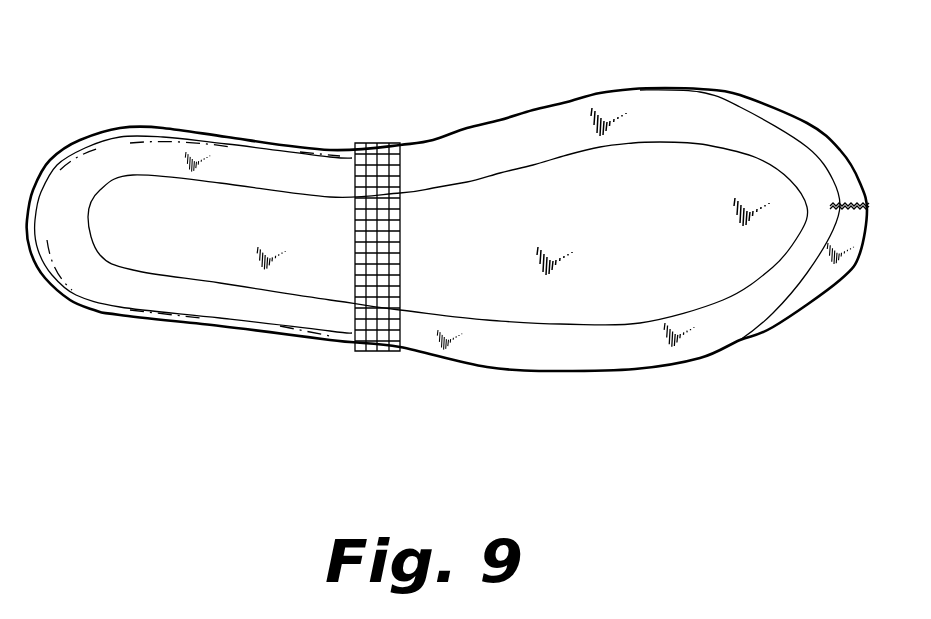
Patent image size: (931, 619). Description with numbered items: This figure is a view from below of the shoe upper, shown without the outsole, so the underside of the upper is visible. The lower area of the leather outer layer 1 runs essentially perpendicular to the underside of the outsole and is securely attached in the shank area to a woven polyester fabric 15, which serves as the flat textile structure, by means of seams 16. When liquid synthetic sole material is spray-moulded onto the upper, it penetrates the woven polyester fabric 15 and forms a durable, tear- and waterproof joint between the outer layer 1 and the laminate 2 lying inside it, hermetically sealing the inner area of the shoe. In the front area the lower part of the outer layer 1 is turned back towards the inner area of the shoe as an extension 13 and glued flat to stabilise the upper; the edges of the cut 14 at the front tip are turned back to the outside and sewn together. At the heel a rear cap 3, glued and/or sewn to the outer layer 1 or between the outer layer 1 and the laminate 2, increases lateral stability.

The outer layer 1 is at (122, 128).
The laminate 2 is at (272, 163).
The rear cap 3 is at (190, 133).
The extension 13 is at (747, 103).
The cut 14 is at (840, 205).
The woven polyester fabric 15 is at (382, 232).
The seams 16 is at (370, 140).